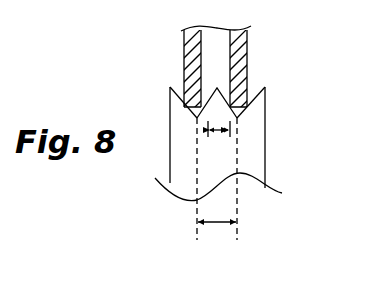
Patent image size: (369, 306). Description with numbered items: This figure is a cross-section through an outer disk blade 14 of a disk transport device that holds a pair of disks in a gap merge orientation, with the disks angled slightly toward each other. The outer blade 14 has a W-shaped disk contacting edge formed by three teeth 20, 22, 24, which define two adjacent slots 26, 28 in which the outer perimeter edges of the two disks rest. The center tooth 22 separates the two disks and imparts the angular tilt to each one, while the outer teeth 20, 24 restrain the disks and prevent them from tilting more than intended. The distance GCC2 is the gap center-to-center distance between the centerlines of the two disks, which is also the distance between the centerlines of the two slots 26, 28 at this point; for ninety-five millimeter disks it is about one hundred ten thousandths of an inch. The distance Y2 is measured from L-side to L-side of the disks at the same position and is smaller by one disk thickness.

The outer disk blade 14 is at (257, 165).
The outer tooth 20 is at (170, 104).
The center tooth 22 is at (184, 63).
The outer tooth 24 is at (256, 104).
The slot 26 is at (205, 124).
The slot 28 is at (242, 117).
The L-side to L-side distance Y2 is at (217, 132).
The gap center-to-center distance GCC2 is at (217, 228).